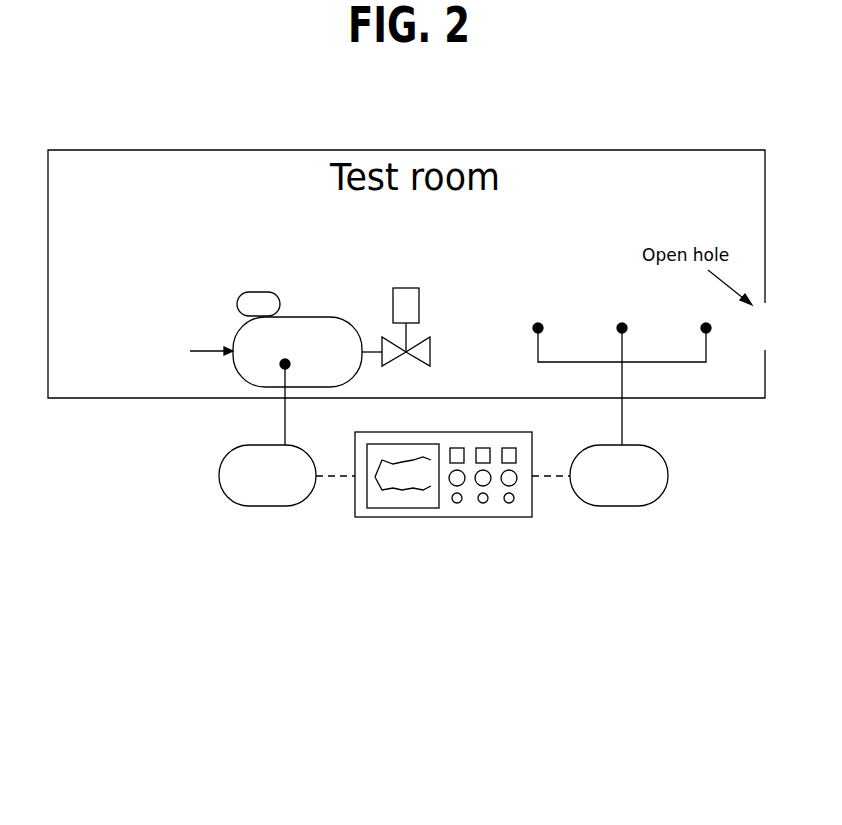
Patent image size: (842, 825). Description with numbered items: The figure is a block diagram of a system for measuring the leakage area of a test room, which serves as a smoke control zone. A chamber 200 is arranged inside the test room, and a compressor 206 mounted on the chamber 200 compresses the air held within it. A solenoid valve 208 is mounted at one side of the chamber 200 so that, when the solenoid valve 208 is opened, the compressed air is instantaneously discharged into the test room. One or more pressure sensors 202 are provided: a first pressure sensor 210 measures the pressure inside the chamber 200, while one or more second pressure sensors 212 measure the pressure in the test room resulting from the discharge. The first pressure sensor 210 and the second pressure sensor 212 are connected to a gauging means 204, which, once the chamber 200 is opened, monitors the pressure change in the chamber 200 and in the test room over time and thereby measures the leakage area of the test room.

The chamber 200 is at (245, 367).
The pressure sensors 202 is at (613, 653).
The gauging means 204 is at (457, 517).
The compressor 206 is at (256, 292).
The solenoid valve 208 is at (419, 300).
The first pressure sensor 210 is at (267, 506).
The second pressure sensor 212 is at (618, 506).